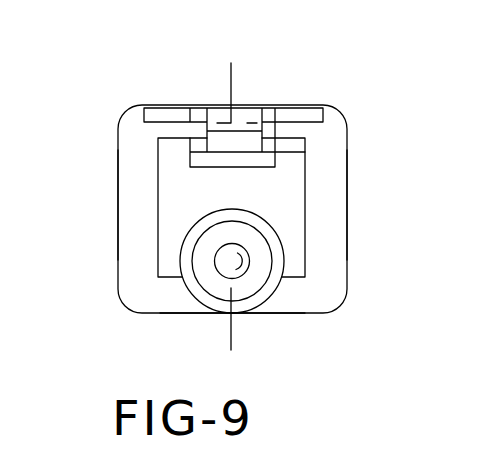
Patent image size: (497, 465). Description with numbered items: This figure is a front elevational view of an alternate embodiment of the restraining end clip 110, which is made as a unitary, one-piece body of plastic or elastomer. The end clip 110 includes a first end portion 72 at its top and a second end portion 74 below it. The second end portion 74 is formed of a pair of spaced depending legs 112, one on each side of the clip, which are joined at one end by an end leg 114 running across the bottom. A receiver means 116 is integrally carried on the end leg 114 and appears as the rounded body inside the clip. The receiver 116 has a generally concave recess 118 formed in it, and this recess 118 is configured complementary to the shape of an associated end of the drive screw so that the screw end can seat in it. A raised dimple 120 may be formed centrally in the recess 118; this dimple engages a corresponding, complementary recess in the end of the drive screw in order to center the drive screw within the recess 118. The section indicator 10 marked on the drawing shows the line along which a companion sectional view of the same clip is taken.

The section line 10- 10 is at (245, 80).
The first end portion 72 is at (165, 99).
The second end portion 74 is at (108, 170).
The restraining end clip 110 is at (116, 121).
The depending legs 112 is at (132, 209).
The end leg 114 is at (158, 303).
The receiver means 116 is at (275, 283).
The concave recess 118 is at (236, 290).
The raised dimple 120 is at (233, 263).